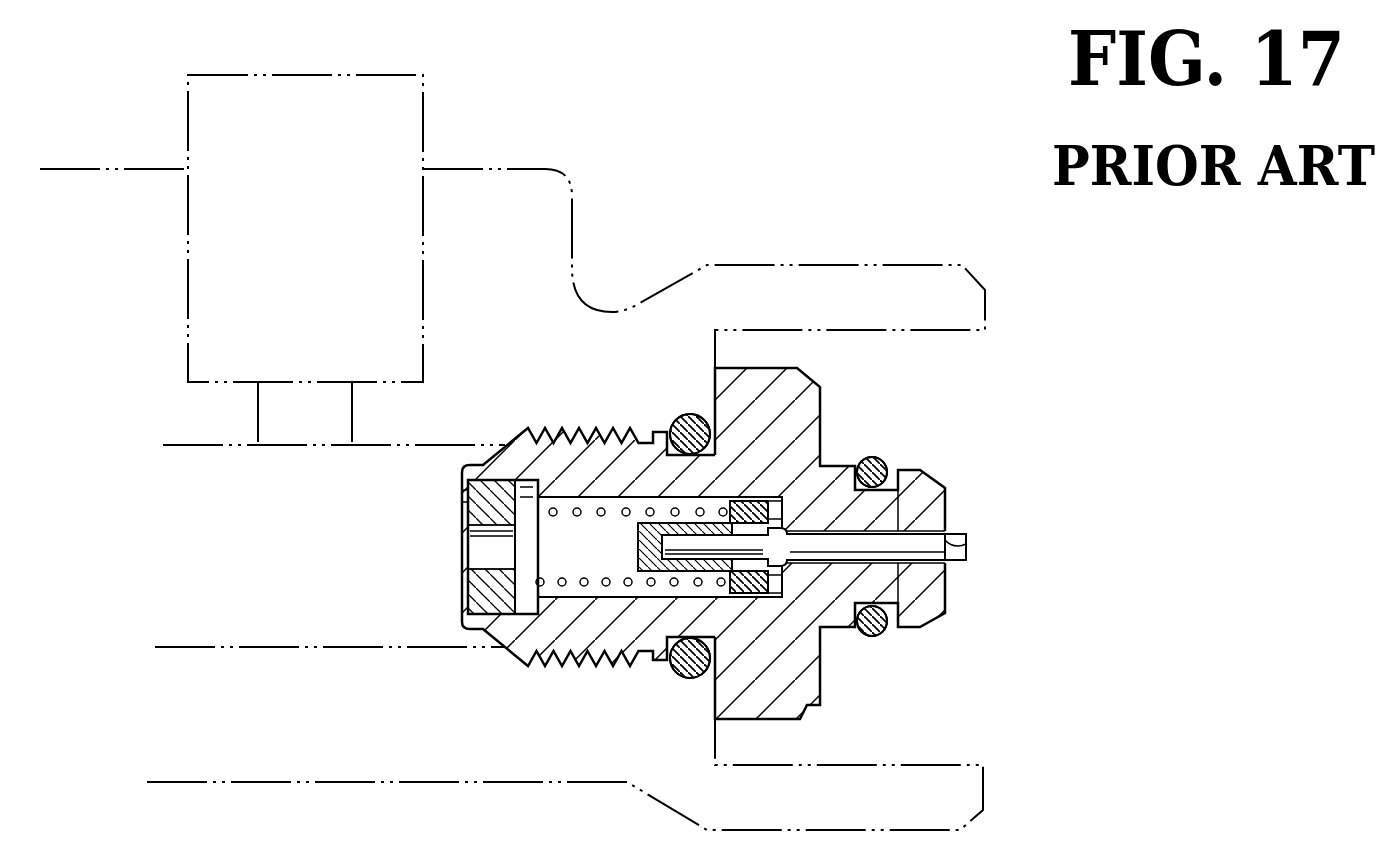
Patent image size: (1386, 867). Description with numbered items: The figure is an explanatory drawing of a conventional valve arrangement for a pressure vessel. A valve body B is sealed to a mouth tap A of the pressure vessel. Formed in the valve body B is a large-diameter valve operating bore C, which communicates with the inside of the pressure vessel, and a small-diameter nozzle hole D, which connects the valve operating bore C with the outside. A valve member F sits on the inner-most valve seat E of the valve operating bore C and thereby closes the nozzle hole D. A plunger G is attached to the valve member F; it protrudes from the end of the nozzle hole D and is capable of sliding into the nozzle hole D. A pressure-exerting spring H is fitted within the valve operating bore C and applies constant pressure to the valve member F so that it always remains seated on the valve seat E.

The mouth tap A is at (778, 270).
The valve body B is at (816, 688).
The valve operating bore C is at (596, 558).
The nozzle hole D is at (950, 537).
The valve seat E is at (755, 500).
The valve member F is at (682, 567).
The plunger G is at (966, 552).
The pressure-exerting spring H is at (603, 508).